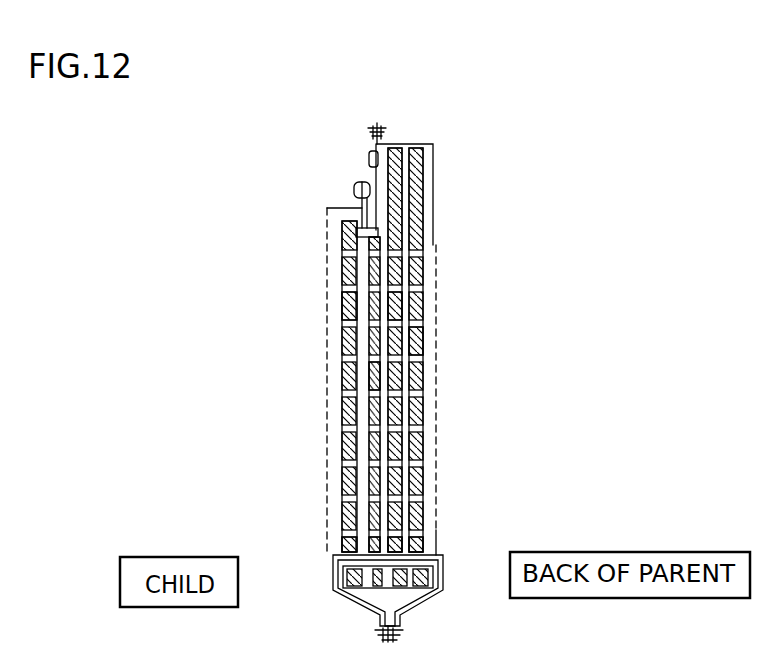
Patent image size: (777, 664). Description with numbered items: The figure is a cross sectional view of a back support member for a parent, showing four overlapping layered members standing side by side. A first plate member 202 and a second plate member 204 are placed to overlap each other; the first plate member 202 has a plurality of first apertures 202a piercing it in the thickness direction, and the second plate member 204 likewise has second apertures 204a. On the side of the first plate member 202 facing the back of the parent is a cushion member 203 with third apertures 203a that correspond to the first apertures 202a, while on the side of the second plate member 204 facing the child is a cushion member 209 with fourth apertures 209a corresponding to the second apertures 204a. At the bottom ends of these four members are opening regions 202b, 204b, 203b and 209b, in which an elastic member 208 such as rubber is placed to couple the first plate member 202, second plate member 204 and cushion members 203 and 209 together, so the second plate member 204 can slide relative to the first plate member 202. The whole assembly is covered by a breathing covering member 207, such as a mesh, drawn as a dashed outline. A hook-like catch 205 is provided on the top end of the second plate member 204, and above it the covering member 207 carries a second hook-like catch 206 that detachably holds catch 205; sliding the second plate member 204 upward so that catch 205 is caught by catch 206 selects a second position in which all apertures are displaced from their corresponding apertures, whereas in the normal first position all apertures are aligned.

The first plate member 202 is at (415, 218).
The first apertures 202a is at (416, 322).
The opening region 202b is at (417, 548).
The cushion member 203 is at (398, 180).
The third apertures 203a is at (396, 290).
The opening region 203b is at (400, 553).
The second plate member 204 is at (372, 346).
The second apertures 204a is at (374, 397).
The opening region 204b is at (375, 553).
The catch 205 is at (354, 190).
The catch 206 is at (369, 160).
The covering member 207 is at (327, 462).
The elastic member 208 is at (362, 612).
The cushion member 209 is at (345, 233).
The fourth apertures 209a is at (350, 296).
The opening region 209b is at (344, 552).